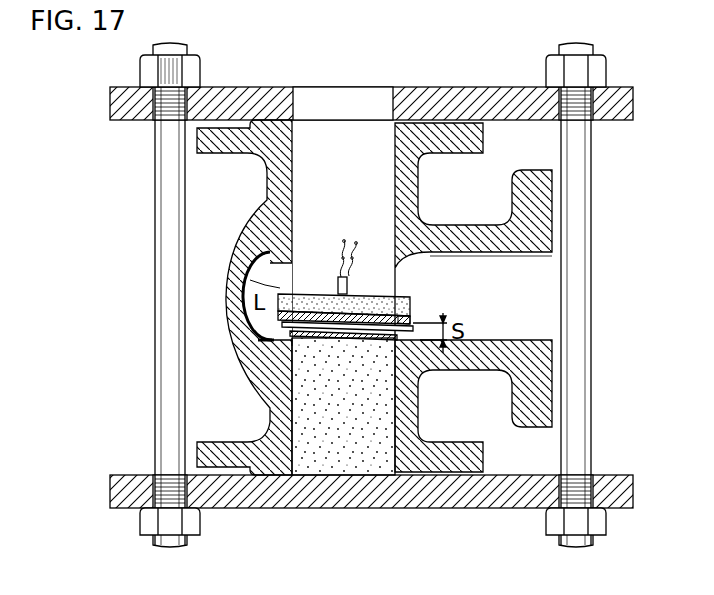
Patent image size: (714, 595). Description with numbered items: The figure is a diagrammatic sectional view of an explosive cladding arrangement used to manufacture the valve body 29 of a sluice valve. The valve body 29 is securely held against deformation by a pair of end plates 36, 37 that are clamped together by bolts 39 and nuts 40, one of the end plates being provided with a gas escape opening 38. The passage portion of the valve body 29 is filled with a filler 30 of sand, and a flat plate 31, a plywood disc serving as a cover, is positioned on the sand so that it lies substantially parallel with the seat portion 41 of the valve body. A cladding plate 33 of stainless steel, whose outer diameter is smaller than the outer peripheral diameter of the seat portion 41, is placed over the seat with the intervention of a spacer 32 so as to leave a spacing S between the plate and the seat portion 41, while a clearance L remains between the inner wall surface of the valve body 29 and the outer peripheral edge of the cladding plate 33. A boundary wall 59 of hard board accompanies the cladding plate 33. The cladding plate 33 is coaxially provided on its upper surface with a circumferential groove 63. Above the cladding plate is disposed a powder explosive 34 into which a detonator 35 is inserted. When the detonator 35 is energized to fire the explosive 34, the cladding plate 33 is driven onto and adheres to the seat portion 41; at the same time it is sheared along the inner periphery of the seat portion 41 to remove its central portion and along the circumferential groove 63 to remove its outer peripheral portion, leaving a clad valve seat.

The valve body 29 is at (232, 305).
The filler 30 is at (351, 459).
The flat plate 31 is at (378, 339).
The spacer 32 is at (250, 342).
The cladding plate 33 is at (412, 328).
The explosive 34 is at (358, 296).
The detonator 35 is at (338, 284).
The end plate 36 is at (617, 121).
The end plate 37 is at (126, 473).
The gas escape opening 38 is at (362, 93).
The bolt 39 is at (157, 190).
The nut 40 is at (138, 72).
The seat portion 41 is at (292, 346).
The boundary wall 59 is at (247, 266).
The circumferential groove 63 is at (398, 316).